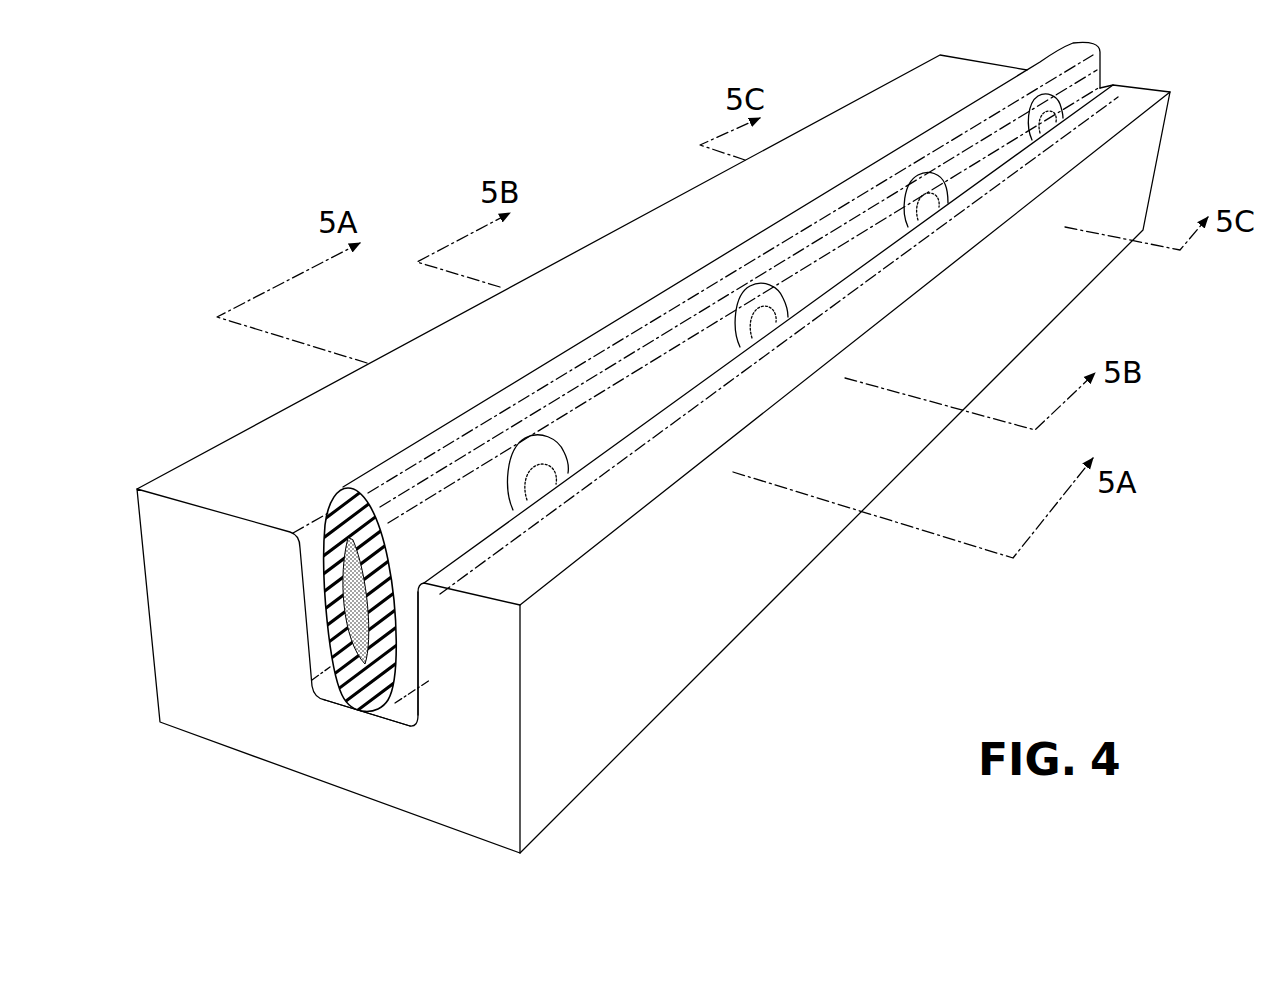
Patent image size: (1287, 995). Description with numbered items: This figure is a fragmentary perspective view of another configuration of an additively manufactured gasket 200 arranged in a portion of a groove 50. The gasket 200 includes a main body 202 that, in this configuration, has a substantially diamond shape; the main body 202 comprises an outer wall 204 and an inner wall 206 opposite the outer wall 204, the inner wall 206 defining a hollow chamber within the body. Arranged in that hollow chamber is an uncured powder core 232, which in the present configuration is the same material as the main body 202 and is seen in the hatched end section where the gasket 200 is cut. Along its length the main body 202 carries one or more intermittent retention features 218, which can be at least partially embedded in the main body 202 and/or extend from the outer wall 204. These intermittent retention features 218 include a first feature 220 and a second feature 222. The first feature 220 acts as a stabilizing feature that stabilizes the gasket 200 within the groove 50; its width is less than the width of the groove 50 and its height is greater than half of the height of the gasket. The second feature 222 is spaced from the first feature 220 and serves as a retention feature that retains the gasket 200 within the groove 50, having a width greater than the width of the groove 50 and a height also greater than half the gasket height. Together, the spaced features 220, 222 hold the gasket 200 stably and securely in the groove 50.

The groove 50 is at (183, 613).
The gasket 200 is at (666, 403).
The main body 202 is at (447, 530).
The outer wall 204 is at (420, 587).
The inner wall 206 is at (390, 700).
The intermittent retention features 218 is at (583, 437).
The first feature 220 is at (777, 317).
The second feature 222 is at (545, 478).
The uncured powder core 232 is at (335, 575).